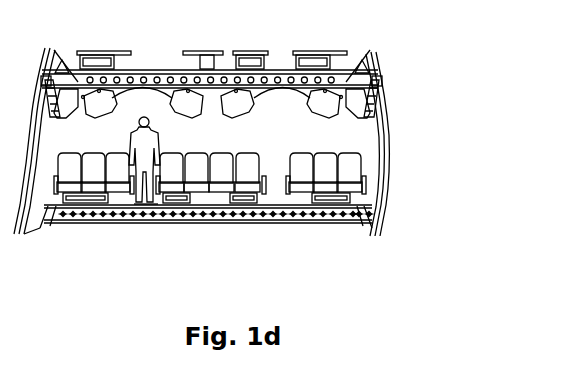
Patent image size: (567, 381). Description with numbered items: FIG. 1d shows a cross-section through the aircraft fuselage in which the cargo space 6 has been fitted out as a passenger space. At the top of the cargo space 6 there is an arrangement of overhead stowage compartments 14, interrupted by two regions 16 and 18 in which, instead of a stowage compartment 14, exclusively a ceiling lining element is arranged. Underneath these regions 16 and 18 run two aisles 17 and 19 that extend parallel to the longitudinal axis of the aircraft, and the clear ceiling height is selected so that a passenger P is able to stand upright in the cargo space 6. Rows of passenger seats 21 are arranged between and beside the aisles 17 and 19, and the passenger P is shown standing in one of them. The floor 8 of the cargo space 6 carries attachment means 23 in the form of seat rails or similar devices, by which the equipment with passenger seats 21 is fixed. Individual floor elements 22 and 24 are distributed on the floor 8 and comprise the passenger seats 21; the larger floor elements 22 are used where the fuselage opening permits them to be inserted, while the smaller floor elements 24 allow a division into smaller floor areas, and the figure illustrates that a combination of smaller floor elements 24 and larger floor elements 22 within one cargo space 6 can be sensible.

The cargo space 6 is at (424, 97).
The floor 8 is at (72, 218).
The overhead stowage compartment 14 is at (97, 107).
The region with ceiling lining element 16 is at (143, 97).
The aisle 17 is at (142, 208).
The region with ceiling lining element 18 is at (268, 101).
The aisle 19 is at (275, 214).
The passenger seat 21 is at (245, 170).
The floor element 22 is at (177, 218).
The attachment means 23 is at (52, 220).
The floor element 24 is at (122, 218).
The passenger P is at (153, 128).